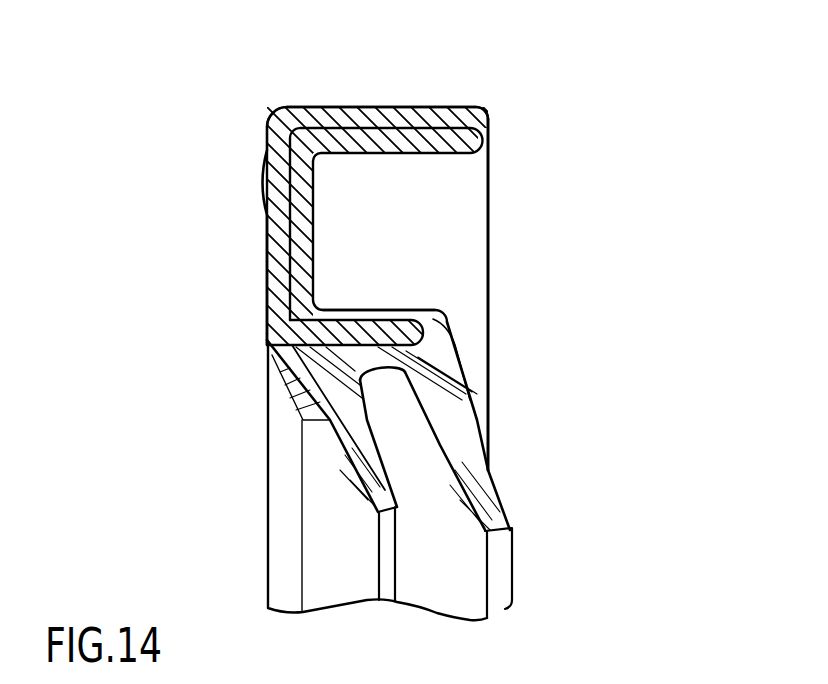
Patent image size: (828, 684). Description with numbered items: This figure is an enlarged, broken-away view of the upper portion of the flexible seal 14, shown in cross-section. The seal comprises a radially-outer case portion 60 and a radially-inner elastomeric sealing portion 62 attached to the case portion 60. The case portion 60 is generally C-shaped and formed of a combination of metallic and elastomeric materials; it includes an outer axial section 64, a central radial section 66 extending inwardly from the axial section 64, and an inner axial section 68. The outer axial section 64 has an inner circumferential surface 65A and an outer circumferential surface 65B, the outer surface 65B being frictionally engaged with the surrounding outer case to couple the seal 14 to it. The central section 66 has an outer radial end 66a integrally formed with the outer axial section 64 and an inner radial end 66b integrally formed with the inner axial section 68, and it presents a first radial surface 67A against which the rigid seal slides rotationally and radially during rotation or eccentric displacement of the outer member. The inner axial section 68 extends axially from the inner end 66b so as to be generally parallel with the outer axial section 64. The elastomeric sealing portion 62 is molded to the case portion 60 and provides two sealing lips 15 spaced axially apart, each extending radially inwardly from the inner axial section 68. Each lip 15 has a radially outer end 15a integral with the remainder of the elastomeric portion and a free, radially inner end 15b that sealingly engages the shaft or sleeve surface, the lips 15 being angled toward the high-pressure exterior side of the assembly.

The flexible seal 14 is at (548, 257).
The sealing lip 15 is at (399, 468).
The radially outer end of sealing lip 15a is at (345, 413).
The radially inner end of sealing lip 15b is at (368, 498).
The case portion 60 is at (250, 232).
The elastomeric sealing portion 62 is at (290, 381).
The outer axial section 64 is at (387, 107).
The inner circumferential surface 65A is at (406, 156).
The outer circumferential surface 65B is at (430, 107).
The central radial section 66 is at (268, 266).
The outer radial end 66a is at (298, 141).
The inner radial end 66b is at (285, 318).
The first radial surface 67A is at (313, 228).
The inner axial section 68 is at (366, 310).